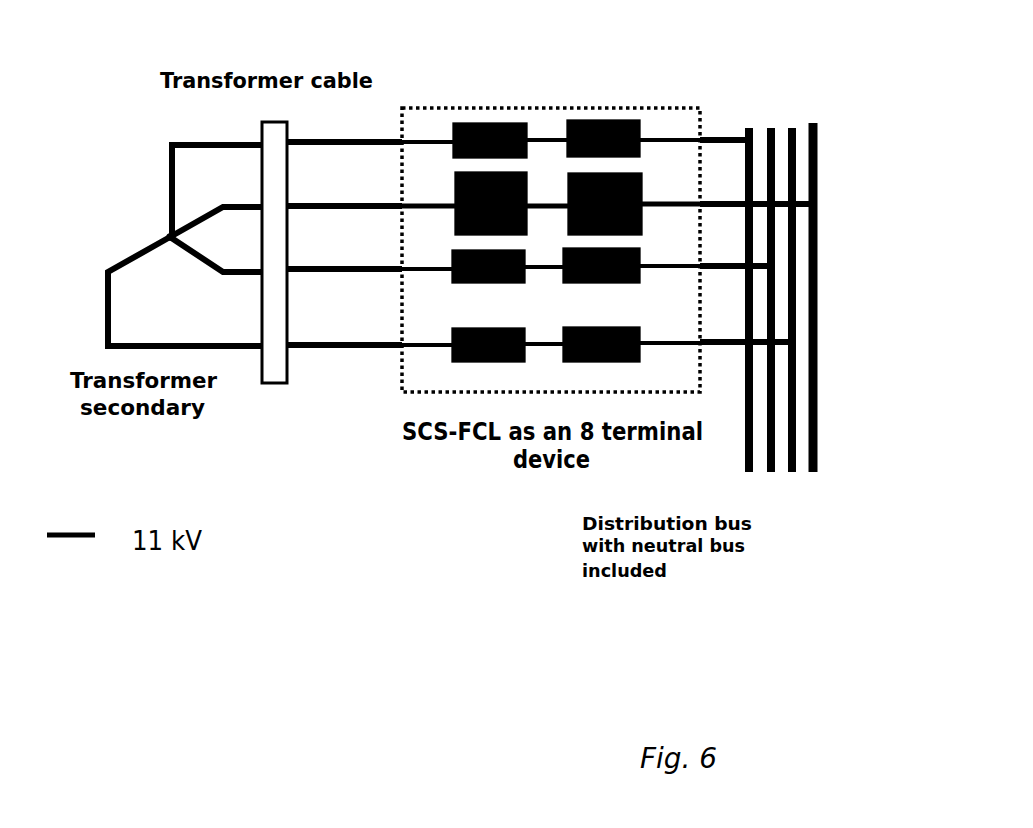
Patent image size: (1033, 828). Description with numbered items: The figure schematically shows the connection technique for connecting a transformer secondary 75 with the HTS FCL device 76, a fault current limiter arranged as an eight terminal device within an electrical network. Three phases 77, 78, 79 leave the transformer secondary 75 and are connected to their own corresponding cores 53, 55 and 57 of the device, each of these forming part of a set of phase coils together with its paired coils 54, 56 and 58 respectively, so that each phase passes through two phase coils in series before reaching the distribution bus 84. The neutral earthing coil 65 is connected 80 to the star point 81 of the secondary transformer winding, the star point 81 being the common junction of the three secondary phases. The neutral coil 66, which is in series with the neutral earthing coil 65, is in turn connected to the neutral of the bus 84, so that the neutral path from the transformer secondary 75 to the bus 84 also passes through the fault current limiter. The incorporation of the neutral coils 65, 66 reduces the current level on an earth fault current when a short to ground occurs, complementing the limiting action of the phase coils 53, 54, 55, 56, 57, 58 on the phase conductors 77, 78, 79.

The first set phase coil 53 is at (478, 123).
The first set phase coil 54 is at (595, 120).
The second set phase coil 55 is at (452, 280).
The second set phase coil 56 is at (613, 283).
The third set phase coil 57 is at (467, 362).
The third set phase coil 58 is at (610, 362).
The neutral earthing coil 65 is at (453, 183).
The neutral coil 66 is at (642, 176).
The transformer secondary 75 is at (90, 447).
The HTS FCL device 76 is at (664, 106).
The phase 77 is at (328, 140).
The phase 78 is at (323, 267).
The phase 79 is at (317, 343).
The connection 80 is at (298, 205).
The star point 81 is at (148, 215).
The bus 84 is at (820, 168).